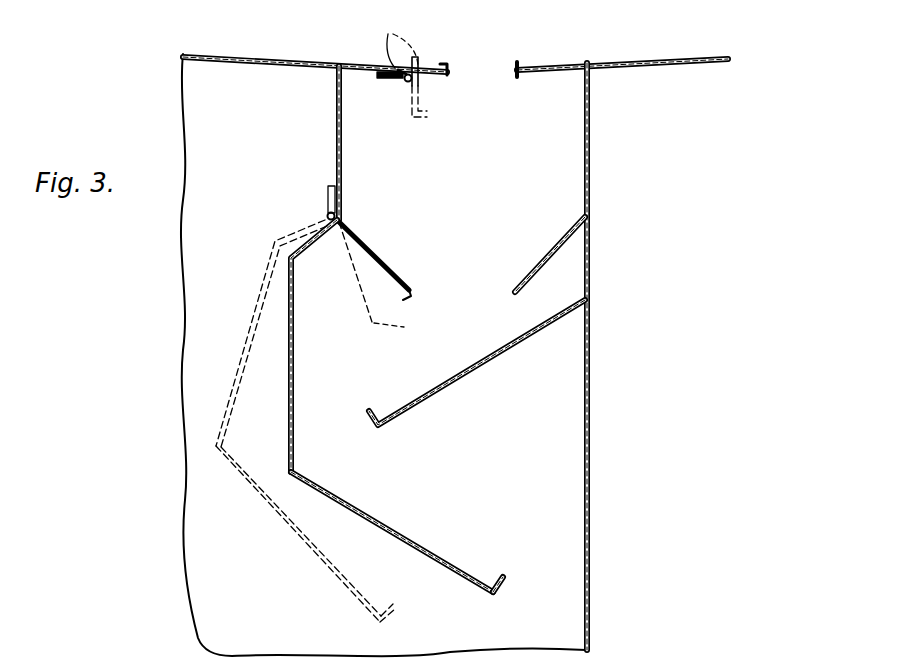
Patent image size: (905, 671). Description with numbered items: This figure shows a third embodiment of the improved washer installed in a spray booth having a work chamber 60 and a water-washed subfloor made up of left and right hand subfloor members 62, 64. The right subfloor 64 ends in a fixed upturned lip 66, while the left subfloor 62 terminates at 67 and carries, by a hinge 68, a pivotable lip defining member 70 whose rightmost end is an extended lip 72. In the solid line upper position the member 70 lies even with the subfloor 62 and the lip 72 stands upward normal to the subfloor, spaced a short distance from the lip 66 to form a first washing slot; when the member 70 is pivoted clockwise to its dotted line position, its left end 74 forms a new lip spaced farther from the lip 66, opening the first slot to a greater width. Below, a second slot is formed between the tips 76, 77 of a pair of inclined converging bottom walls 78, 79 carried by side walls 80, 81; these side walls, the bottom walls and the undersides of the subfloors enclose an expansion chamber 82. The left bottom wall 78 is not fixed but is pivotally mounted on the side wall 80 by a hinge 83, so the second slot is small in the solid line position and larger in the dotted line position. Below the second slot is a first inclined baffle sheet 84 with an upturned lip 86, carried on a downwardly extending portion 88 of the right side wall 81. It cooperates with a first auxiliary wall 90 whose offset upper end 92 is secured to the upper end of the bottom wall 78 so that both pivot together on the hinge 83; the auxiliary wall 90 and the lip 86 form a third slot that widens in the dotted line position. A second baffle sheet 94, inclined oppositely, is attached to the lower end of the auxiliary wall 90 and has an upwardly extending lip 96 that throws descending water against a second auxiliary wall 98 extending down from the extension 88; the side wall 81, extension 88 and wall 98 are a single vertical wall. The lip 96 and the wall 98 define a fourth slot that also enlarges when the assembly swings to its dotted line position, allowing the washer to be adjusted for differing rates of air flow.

The work chamber 60 is at (490, 28).
The left hand subfloor member 62 is at (243, 55).
The right hand subfloor member 64 is at (690, 58).
The fixed upturned lip 66 is at (519, 66).
The termination of left subfloor 67 is at (398, 71).
The hinge 68 is at (392, 80).
The pivotable lip defining member 70 is at (428, 80).
The extended lip 72 is at (445, 66).
The left end of pivotable member 74 is at (396, 37).
The tip of left bottom wall 76 is at (404, 298).
The tip of right bottom wall 77 is at (512, 289).
The left bottom wall 78 is at (360, 277).
The right bottom wall 79 is at (556, 242).
The left side wall 80 is at (336, 103).
The right side wall 81 is at (590, 128).
The expansion chamber 82 is at (548, 152).
The hinge 83 is at (328, 203).
The first inclined baffle sheet 84 is at (483, 358).
The upturned lip 86 is at (373, 411).
The downwardly extending portion 88 is at (590, 268).
The first auxiliary wall 90 is at (252, 318).
The upper end of auxiliary wall 92 is at (282, 232).
The second baffle sheet 94 is at (384, 522).
The upwardly extending lip 96 is at (503, 578).
The second auxiliary wall 98 is at (590, 501).